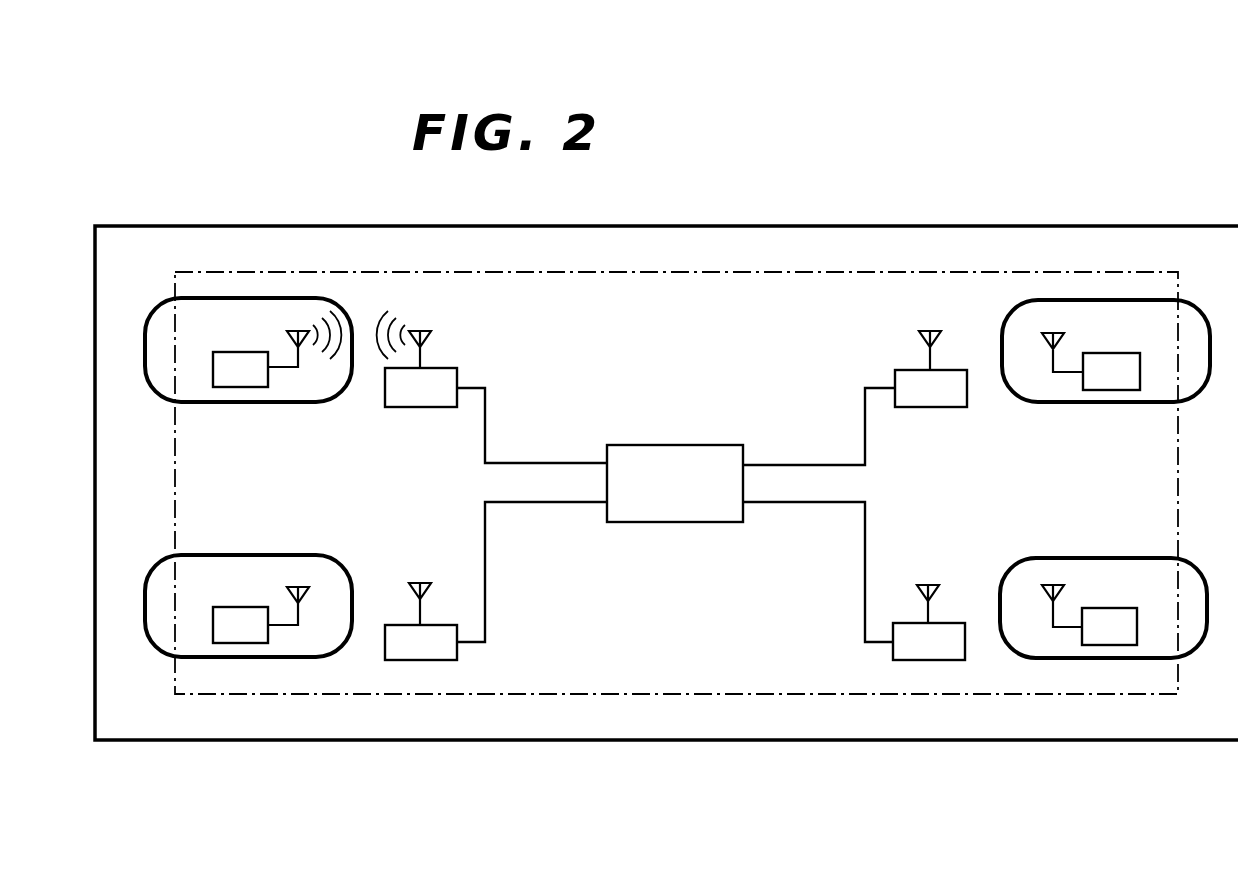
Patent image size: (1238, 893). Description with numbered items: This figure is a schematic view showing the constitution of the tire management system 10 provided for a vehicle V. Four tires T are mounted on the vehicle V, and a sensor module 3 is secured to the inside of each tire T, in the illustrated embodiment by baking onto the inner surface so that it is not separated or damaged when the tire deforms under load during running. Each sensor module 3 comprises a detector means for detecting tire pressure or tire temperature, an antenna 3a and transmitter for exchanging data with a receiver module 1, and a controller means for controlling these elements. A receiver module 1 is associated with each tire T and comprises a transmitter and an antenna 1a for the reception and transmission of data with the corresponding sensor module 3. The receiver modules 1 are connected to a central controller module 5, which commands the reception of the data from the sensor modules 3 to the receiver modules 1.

The vehicle V is at (945, 226).
The tire management system 10 is at (675, 272).
The tire T is at (216, 298).
The sensor module 3 is at (243, 387).
The antenna 3a is at (1053, 332).
The receiver module 1 is at (457, 368).
The antenna 1a is at (930, 330).
The central controller module 5 is at (673, 445).